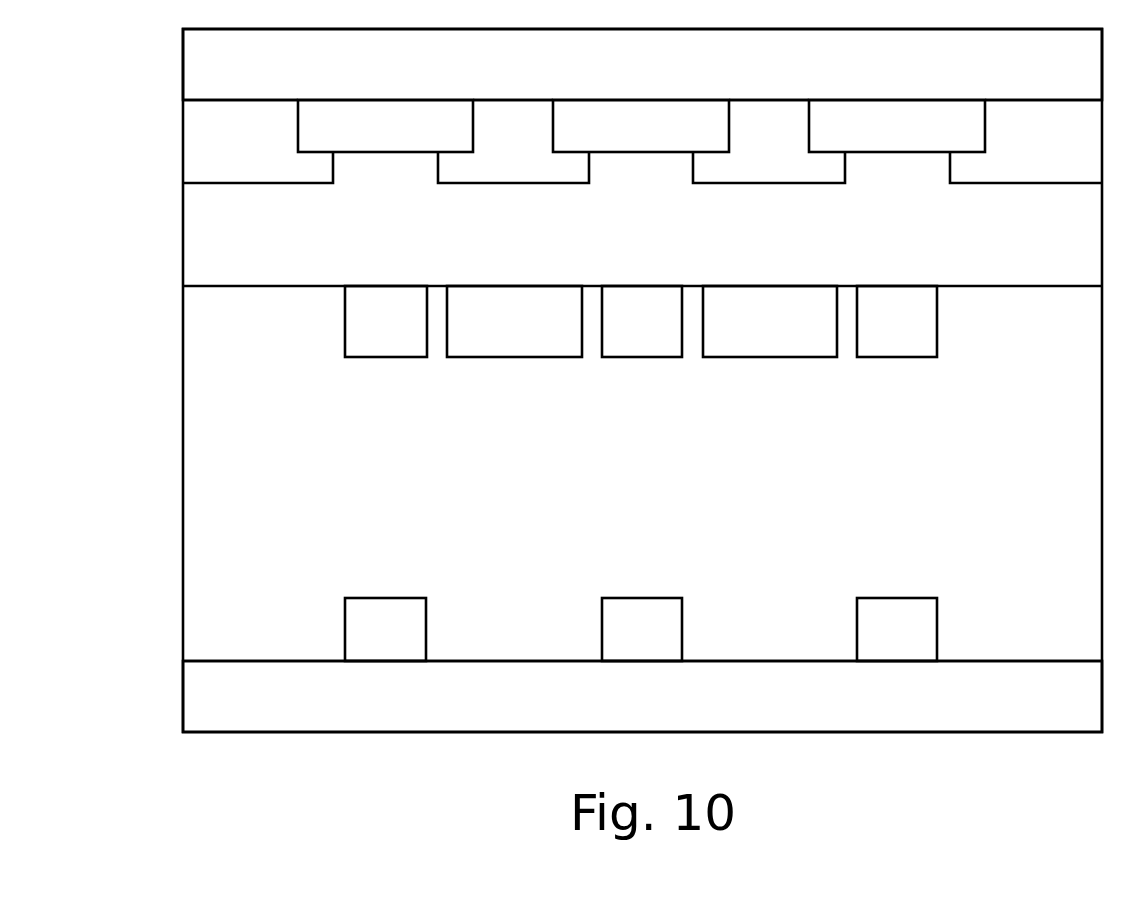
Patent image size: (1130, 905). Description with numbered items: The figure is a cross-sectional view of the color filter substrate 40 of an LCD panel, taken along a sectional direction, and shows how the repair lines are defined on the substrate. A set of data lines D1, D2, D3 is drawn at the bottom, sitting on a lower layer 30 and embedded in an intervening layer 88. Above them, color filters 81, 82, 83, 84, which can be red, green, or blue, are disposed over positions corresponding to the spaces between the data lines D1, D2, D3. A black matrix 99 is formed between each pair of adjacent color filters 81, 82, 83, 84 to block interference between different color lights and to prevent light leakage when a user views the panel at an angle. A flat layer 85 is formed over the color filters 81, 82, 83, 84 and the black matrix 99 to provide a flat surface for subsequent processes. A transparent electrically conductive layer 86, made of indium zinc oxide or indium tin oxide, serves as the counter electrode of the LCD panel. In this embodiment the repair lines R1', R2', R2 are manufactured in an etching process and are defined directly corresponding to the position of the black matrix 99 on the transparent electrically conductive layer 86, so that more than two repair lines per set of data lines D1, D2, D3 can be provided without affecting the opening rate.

The substrate 30 is at (613, 708).
The color filter substrate 40 is at (613, 78).
The color filter 81 is at (240, 163).
The color filter 82 is at (496, 165).
The color filter 83 is at (752, 165).
The color filter 84 is at (1008, 163).
The flat layer 85 is at (613, 257).
The transparent electrically conductive layer 86 is at (496, 331).
The insulating layer 88 is at (613, 560).
The black matrix 99 is at (368, 138).
The repair line R1' is at (386, 373).
The repair line R2' is at (642, 373).
The repair line R2 is at (897, 373).
The data line D1 is at (385, 629).
The data line D2 is at (642, 629).
The data line D3 is at (897, 629).